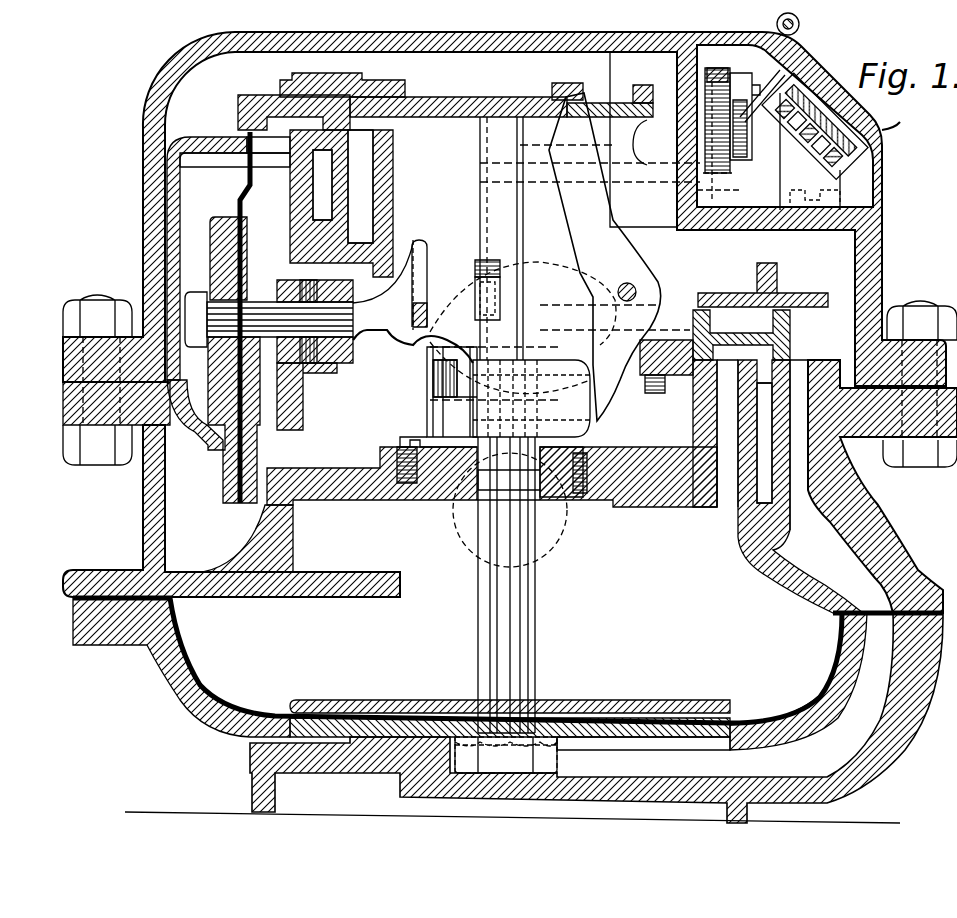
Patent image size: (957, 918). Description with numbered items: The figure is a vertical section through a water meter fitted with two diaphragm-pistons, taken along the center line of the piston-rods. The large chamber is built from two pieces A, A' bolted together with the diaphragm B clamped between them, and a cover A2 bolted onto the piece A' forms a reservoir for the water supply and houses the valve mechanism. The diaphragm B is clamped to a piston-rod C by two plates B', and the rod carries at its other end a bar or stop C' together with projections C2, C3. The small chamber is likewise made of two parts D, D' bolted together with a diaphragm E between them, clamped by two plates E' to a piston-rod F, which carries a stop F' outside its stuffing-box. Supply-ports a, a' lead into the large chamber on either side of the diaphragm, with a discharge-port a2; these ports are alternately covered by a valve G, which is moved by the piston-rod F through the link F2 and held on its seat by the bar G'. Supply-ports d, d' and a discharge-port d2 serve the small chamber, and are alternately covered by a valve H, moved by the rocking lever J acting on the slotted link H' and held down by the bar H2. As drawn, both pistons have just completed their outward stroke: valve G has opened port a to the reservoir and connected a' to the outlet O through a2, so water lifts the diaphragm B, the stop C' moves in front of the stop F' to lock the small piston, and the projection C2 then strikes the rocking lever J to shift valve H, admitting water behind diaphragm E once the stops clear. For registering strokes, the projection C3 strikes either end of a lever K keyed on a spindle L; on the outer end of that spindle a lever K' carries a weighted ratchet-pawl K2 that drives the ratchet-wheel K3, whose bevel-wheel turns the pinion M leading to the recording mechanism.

The large chamber piece A is at (508, 710).
The large chamber piece A' is at (510, 486).
The cover A2 is at (462, 45).
The diaphragm B is at (490, 654).
The clamping plates B' is at (510, 704).
The piston-rod C is at (506, 585).
The bar or stop C' is at (436, 397).
The projection C2 is at (531, 398).
The projection C3 is at (477, 285).
The outlet O is at (462, 492).
The small chamber part D is at (222, 317).
The small chamber part D' is at (252, 293).
The supply-port d is at (268, 149).
The supply-port d' is at (360, 186).
The discharge-port d2 is at (322, 185).
The diaphragm E is at (234, 420).
The clamping plates E' is at (240, 258).
The piston-rod F is at (269, 313).
The stop F' is at (399, 283).
The link F2 is at (521, 331).
The valve G is at (715, 351).
The bar G' is at (763, 282).
The valve H is at (271, 113).
The link H' is at (471, 180).
The bar H2 is at (342, 79).
The rocking lever J is at (605, 257).
The lever K is at (501, 238).
The lever K' is at (745, 106).
The weighted ratchet-pawl K2 is at (717, 121).
The ratchet-wheel K3 is at (712, 185).
The spindle L is at (590, 140).
The pinion M is at (765, 85).
The supply-port a is at (827, 555).
The supply-port a' is at (727, 433).
The discharge-port a2 is at (763, 443).